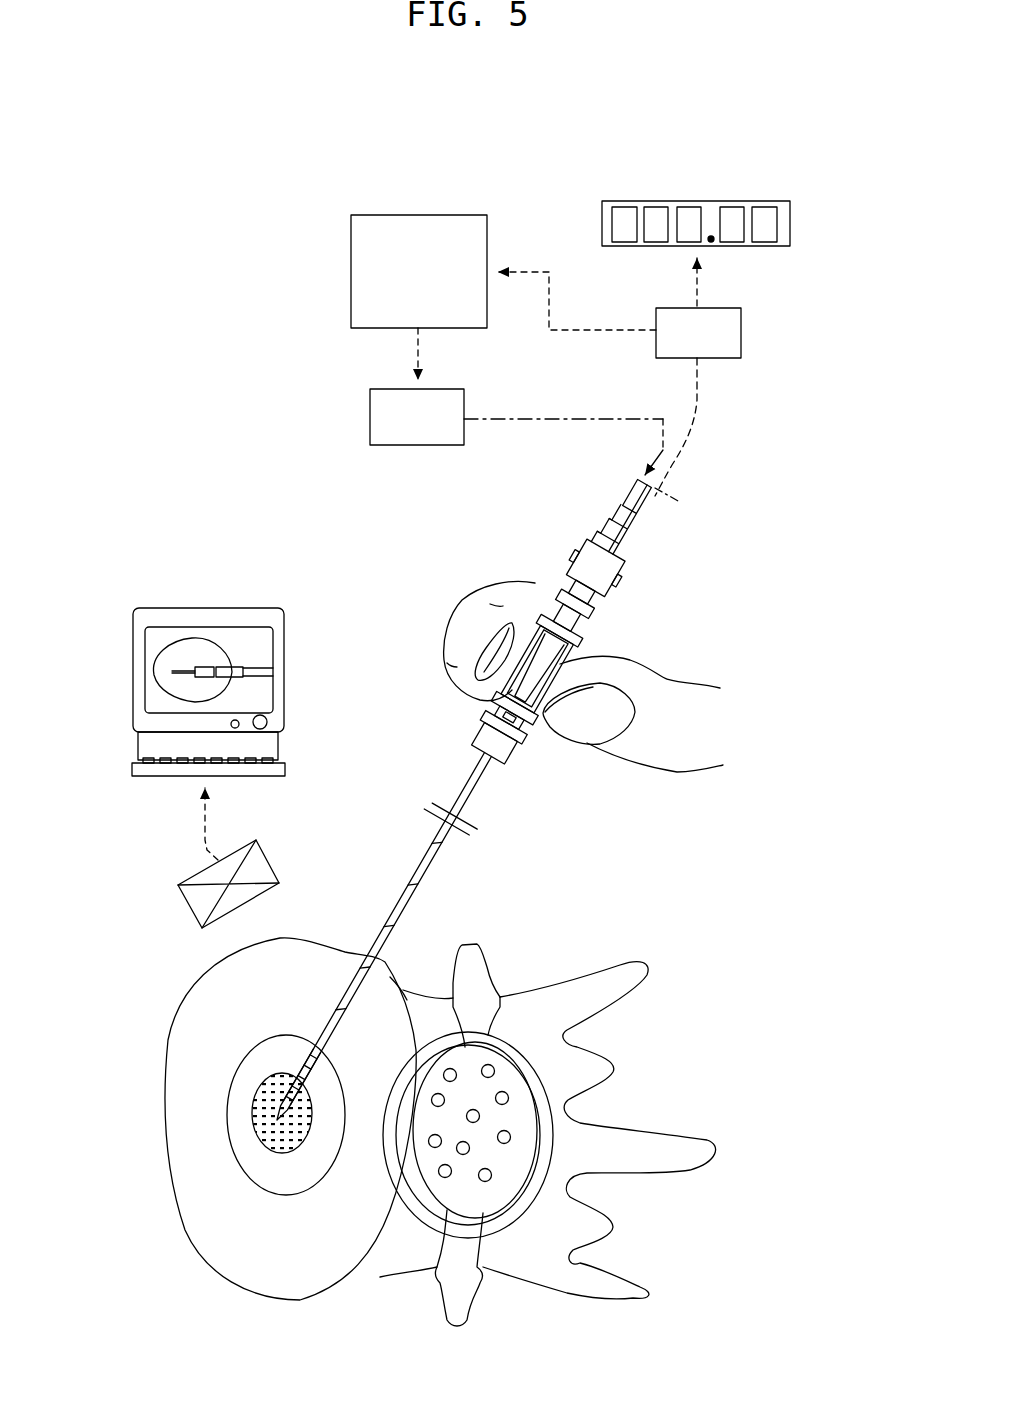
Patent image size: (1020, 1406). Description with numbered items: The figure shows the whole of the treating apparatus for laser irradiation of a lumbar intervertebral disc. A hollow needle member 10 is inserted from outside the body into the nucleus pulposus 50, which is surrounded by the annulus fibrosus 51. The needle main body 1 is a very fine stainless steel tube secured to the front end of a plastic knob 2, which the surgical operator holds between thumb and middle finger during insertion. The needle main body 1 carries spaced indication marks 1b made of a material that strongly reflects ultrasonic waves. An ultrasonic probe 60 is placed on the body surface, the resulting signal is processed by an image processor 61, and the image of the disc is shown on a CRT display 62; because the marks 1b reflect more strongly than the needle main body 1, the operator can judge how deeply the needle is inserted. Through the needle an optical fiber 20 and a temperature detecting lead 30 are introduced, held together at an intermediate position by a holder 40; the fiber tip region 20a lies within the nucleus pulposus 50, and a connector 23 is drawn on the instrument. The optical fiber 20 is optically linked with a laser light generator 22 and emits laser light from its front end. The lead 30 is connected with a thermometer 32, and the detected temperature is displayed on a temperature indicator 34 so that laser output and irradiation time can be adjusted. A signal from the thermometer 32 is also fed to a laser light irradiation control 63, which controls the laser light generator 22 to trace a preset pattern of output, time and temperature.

The needle main body 1 is at (432, 867).
The indication marks 1b is at (389, 915).
The knob 2 is at (538, 722).
The needle member 10 is at (248, 668).
The optical fiber 20 is at (633, 492).
The probe tip irradiated region 20a is at (278, 1103).
The laser light generator 22 is at (387, 417).
The connector / stopper 23 is at (617, 530).
The temperature detecting lead 30 is at (677, 450).
The thermometer 32 is at (703, 339).
The temperature indicator 34 is at (697, 200).
The holder 40 is at (582, 568).
The nucleus pulposus 50 is at (285, 1168).
The annulus fibrosus 51 is at (197, 1070).
The ultrasonic probe 60 is at (198, 902).
The image processor 61 is at (268, 742).
The CRT display 62 is at (278, 658).
The laser light irradiation control 63 is at (385, 280).